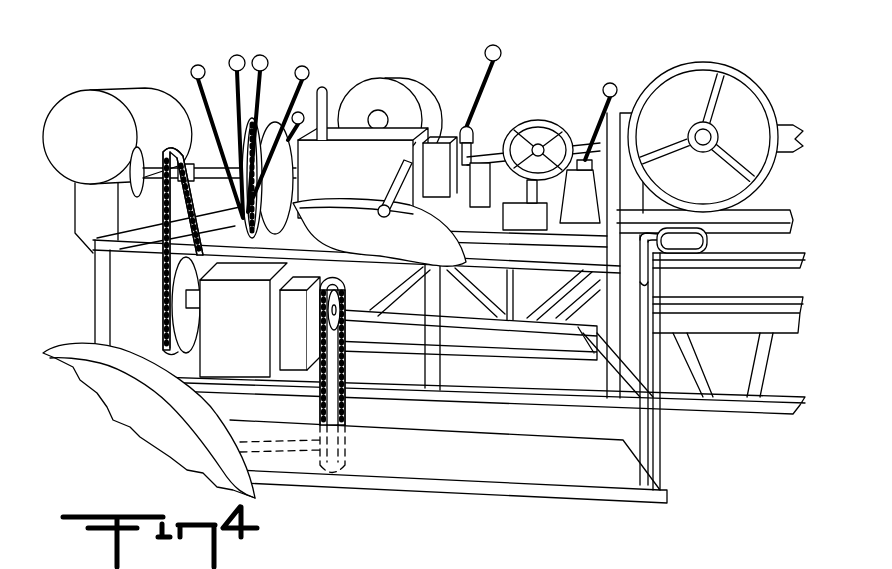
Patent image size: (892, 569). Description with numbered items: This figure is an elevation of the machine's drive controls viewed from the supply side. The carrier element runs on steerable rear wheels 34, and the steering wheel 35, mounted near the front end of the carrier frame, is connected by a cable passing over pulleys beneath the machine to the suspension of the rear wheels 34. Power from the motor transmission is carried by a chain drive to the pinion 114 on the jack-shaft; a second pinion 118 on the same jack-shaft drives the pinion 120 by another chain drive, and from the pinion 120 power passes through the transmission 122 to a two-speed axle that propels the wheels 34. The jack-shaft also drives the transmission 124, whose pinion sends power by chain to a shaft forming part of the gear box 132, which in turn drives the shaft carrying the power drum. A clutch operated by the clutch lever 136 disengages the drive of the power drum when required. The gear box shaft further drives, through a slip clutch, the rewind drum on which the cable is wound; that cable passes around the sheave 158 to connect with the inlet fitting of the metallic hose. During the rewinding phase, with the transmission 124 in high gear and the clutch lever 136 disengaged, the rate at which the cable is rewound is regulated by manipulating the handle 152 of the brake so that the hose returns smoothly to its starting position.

The rear wheels 34 is at (168, 420).
The steering wheel 35 is at (674, 68).
The pinion 114 is at (253, 230).
The pinion 118 is at (117, 136).
The pinion 120 is at (163, 306).
The transmission 122 is at (250, 334).
The transmission 124 is at (340, 170).
The gear box 132 is at (363, 111).
The clutch lever 136 is at (410, 160).
The handle 152 is at (553, 133).
The sheave 158 is at (712, 236).